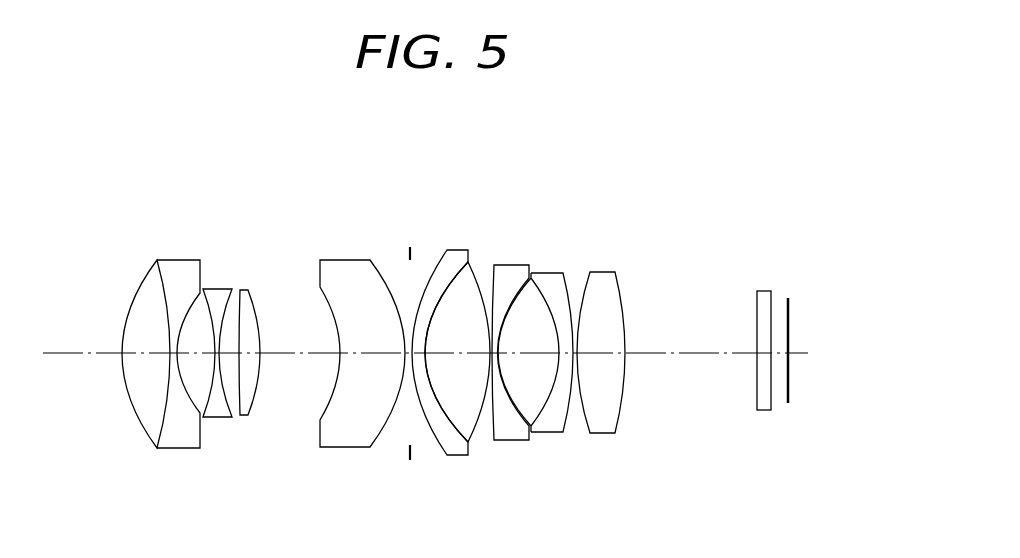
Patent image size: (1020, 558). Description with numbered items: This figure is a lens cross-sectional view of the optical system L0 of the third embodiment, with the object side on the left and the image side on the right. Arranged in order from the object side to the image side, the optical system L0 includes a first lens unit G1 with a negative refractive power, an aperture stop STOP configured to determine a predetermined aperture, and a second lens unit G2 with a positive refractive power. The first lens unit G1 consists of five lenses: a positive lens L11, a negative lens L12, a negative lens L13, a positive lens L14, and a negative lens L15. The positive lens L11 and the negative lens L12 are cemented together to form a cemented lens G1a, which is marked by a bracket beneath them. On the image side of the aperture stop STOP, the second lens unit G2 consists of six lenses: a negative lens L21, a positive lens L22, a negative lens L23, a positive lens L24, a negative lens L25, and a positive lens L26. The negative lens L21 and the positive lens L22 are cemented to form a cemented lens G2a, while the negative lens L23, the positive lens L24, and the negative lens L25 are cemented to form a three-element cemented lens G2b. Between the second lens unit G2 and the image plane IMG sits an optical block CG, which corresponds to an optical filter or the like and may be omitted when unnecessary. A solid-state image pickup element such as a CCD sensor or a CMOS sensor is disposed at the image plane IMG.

The optical system L0 is at (707, 145).
The first lens unit G1 is at (345, 195).
The second lens unit G2 is at (708, 197).
The cemented lens G1a is at (203, 470).
The cemented lens G2a is at (490, 470).
The cemented lens G2b is at (573, 470).
The lens L11 is at (150, 273).
The lens L12 is at (183, 270).
The lens L13 is at (218, 297).
The lens L14 is at (248, 295).
The lens L15 is at (348, 265).
The lens L21 is at (445, 263).
The lens L22 is at (472, 265).
The lens L23 is at (503, 268).
The lens L24 is at (540, 276).
The lens L25 is at (565, 277).
The lens L26 is at (610, 274).
The aperture stop STOP is at (408, 455).
The optical block CG is at (762, 411).
The image plane IMG is at (788, 298).